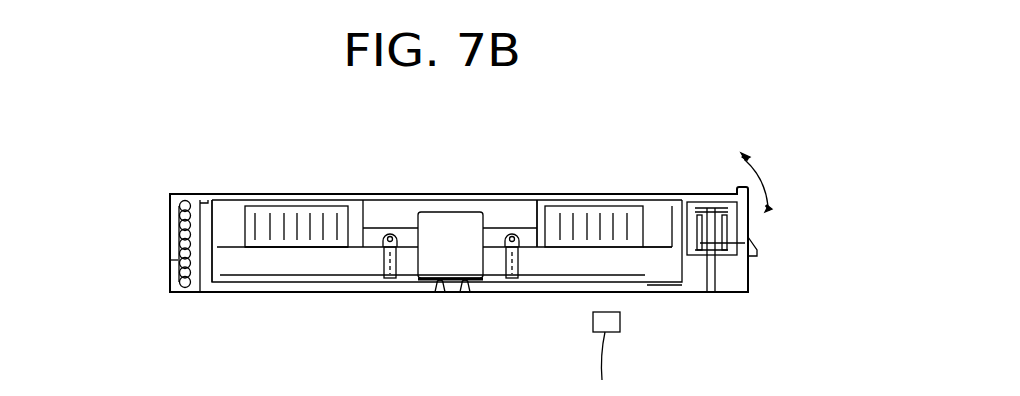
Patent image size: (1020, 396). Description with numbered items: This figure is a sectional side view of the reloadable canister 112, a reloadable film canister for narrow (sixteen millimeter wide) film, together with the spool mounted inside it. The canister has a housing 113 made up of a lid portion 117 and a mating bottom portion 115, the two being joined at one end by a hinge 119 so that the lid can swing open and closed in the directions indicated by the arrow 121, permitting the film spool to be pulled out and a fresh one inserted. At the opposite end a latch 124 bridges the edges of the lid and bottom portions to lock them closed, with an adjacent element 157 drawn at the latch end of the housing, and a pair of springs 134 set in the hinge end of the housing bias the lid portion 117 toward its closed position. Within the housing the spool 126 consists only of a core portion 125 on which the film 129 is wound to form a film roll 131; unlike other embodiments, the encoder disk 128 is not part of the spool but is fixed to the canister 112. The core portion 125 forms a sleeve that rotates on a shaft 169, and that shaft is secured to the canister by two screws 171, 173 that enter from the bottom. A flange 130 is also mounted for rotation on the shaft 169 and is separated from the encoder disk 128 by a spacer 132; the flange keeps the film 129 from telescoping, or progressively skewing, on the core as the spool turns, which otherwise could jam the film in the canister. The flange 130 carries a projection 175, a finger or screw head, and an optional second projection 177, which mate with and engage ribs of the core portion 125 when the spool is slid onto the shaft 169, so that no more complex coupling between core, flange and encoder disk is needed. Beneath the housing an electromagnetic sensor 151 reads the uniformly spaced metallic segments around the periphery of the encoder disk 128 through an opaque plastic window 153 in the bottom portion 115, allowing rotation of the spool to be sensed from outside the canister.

The reloadable canister 112 is at (460, 125).
The housing 113 is at (170, 264).
The bottom portion 115 is at (505, 292).
The lid portion 117 is at (537, 210).
The hinge 119 is at (178, 197).
The arrow 121 is at (760, 185).
The latch 124 is at (752, 242).
The core portion 125 is at (344, 205).
The spool 126 is at (648, 222).
The disk 128 is at (267, 277).
The film 129 is at (290, 215).
The flange 130 is at (300, 250).
The film roll 131 is at (232, 200).
The spacer 132 is at (403, 268).
The spring 134 is at (174, 248).
The electromagnetic sensor 151 is at (622, 322).
The opaque plastic window 153 is at (630, 292).
The terminal 157 is at (745, 250).
The shaft 169 is at (440, 220).
The screw 171 is at (440, 293).
The screw 173 is at (465, 293).
The projection 175 is at (392, 232).
The projection 177 is at (515, 232).